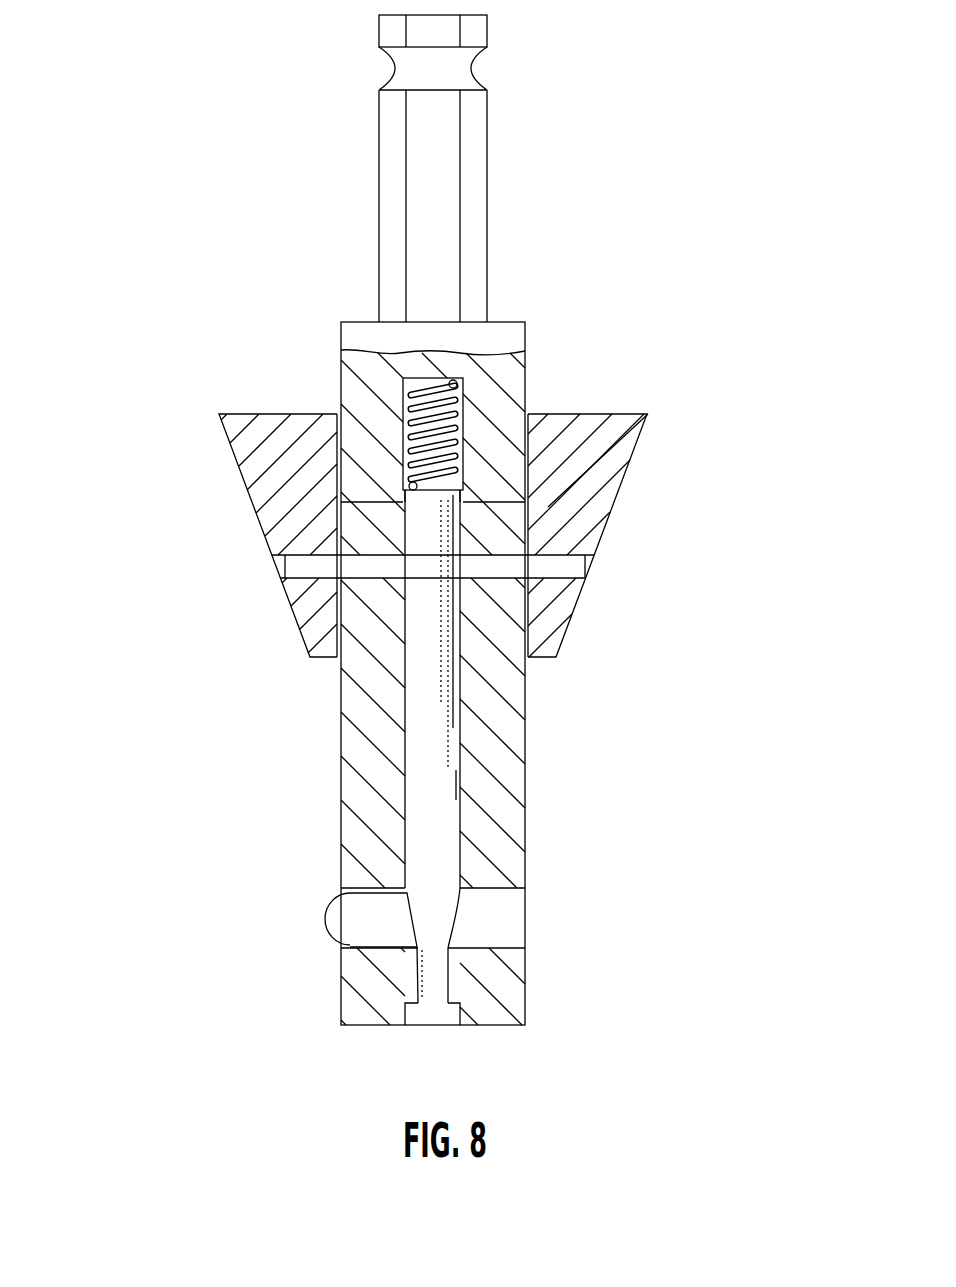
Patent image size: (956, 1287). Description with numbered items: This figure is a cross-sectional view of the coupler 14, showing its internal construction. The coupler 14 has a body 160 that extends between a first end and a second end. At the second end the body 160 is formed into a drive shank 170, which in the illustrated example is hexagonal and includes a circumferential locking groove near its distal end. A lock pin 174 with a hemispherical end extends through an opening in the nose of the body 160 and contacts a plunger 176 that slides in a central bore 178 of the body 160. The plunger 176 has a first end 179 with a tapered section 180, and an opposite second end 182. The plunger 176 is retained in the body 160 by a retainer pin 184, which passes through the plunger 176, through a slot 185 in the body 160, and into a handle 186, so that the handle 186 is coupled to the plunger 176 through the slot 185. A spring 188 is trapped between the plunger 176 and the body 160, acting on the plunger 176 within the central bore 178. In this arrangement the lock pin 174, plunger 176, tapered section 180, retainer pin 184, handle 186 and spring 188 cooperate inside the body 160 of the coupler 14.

The coupler 14 is at (434, 556).
The body 160 is at (507, 852).
The drive shank 170 is at (463, 176).
The lock pin 174 is at (342, 913).
The plunger 176 is at (437, 747).
The central bore 178 is at (460, 795).
The first end 179 is at (423, 1026).
The tapered section 180 is at (437, 920).
The second end 182 is at (436, 490).
The retainer pin 184 is at (565, 568).
The slot 185 is at (494, 504).
The handle 186 is at (577, 430).
The spring 188 is at (463, 402).